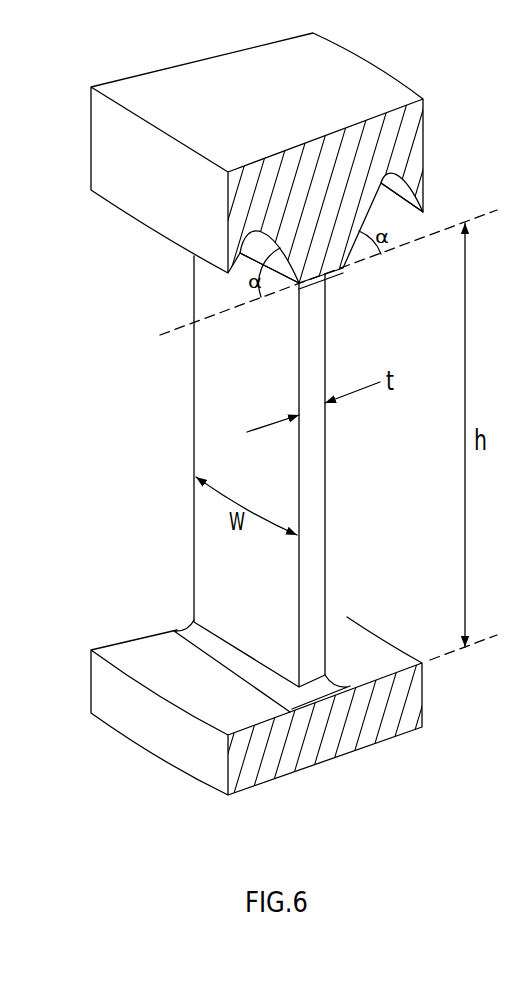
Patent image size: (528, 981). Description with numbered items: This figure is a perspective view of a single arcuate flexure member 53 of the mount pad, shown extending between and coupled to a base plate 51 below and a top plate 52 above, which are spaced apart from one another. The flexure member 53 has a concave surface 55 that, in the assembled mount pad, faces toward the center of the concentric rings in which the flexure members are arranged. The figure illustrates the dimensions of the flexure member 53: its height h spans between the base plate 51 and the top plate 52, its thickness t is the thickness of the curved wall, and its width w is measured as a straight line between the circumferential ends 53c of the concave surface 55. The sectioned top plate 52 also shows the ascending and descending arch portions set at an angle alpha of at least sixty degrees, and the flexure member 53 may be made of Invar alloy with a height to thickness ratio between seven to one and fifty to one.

The base plate 51 is at (415, 709).
The top plate 52 is at (412, 140).
The arcuate flexure member 53 is at (215, 484).
The circumferential ends of the concave surface 53c is at (193, 548).
The concave surface 55 is at (253, 366).